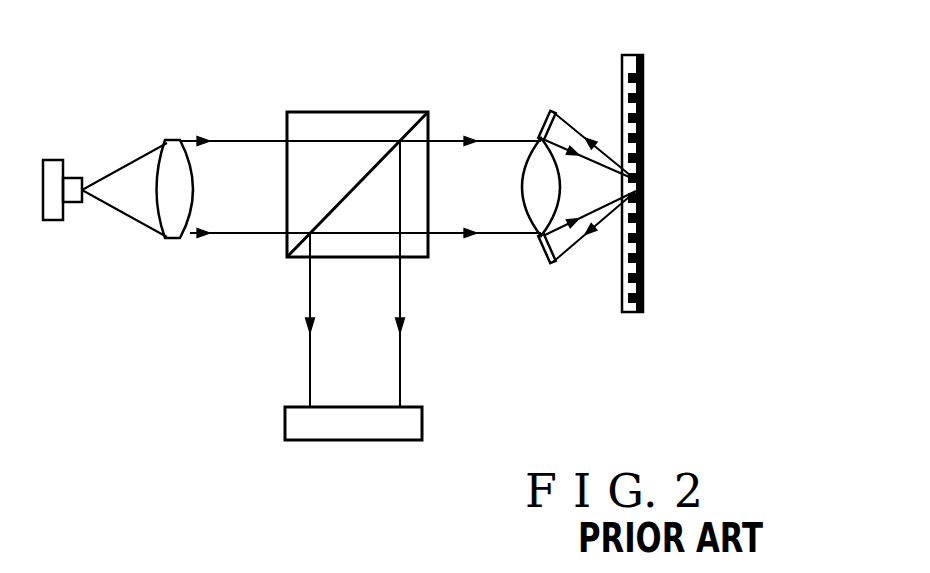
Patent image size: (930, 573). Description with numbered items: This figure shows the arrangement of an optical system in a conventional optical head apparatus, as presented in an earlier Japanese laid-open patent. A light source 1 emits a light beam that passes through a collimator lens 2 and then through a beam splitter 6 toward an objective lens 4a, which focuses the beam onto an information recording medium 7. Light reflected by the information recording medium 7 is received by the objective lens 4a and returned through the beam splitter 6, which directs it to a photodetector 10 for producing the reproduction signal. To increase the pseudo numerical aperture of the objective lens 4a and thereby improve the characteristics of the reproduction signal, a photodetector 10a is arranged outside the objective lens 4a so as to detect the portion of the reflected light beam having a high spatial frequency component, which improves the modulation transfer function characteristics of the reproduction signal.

The light source 1 is at (50, 222).
The collimator lens 2 is at (168, 163).
The beam splitter 6 is at (333, 123).
The objective lens 4a is at (537, 210).
The photodetector 10a is at (545, 124).
The information recording medium 7 is at (628, 300).
The photodetector 10 is at (300, 441).